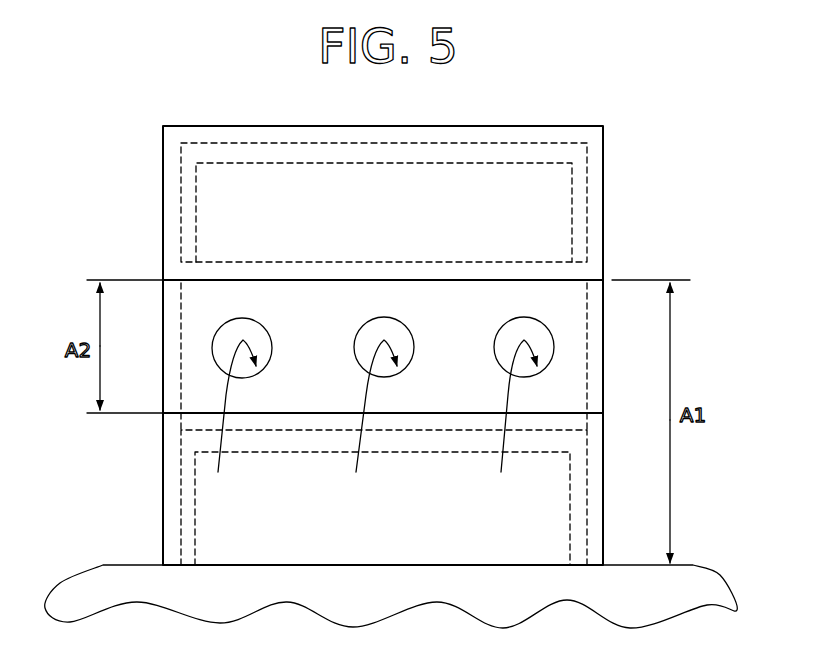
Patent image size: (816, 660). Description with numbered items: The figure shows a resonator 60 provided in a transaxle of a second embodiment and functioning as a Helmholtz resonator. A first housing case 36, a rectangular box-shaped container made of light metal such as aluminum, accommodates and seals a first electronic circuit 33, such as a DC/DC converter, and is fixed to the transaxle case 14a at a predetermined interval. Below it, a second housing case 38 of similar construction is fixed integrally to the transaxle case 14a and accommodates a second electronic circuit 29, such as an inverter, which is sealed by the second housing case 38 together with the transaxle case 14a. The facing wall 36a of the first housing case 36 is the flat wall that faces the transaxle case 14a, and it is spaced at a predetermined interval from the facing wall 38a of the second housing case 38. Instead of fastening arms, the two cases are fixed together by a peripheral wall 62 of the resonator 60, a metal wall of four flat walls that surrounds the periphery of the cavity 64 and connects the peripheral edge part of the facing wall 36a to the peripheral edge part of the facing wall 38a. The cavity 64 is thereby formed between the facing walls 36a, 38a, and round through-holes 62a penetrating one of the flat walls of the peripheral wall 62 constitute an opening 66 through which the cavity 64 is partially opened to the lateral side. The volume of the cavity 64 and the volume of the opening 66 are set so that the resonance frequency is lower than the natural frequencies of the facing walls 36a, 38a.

The first housing case 36 is at (568, 95).
The first electronic circuit 33 is at (228, 210).
The facing wall of the first housing case 36a is at (362, 264).
The resonator 60 is at (143, 328).
The peripheral wall 62 is at (446, 317).
The through-holes 62a is at (251, 325).
The opening 66 is at (369, 419).
The cavity 64 is at (337, 403).
The second housing case 38 is at (138, 470).
The facing wall of the second housing case 38a is at (398, 422).
The transaxle case 14a is at (100, 587).
The second electronic circuit 29 is at (360, 527).